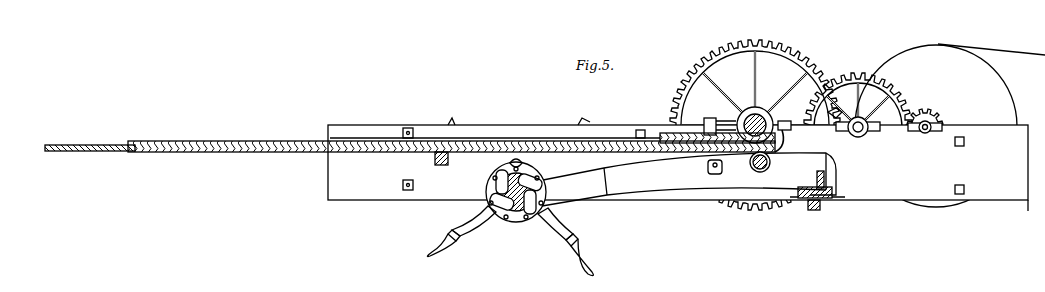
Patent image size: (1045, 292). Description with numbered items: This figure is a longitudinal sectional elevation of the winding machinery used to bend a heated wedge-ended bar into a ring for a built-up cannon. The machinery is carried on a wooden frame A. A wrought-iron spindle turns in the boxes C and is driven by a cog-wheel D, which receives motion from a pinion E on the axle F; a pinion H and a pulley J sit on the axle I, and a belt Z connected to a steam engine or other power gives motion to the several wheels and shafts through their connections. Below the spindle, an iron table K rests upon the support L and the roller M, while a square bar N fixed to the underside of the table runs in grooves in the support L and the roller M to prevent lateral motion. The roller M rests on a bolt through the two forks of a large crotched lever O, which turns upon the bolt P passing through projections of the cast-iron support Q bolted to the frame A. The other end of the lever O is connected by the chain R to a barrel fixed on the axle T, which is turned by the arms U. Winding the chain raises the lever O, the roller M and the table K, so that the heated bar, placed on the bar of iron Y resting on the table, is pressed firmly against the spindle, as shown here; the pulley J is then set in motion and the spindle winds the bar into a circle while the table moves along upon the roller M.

The frame A is at (678, 164).
The boxes C is at (849, 127).
The cog-wheel D is at (755, 127).
The pinion E is at (858, 110).
The axle F is at (828, 108).
The pinion H is at (925, 121).
The axle I is at (925, 137).
The pulley J is at (936, 131).
The iron table K is at (461, 139).
The support L is at (450, 160).
The roller M is at (753, 168).
The square bar N is at (326, 143).
The crotched bar or lever O is at (687, 179).
The bolt P is at (811, 171).
The support Q is at (817, 204).
The chain R is at (516, 202).
The axle T is at (522, 159).
The arms U is at (510, 241).
The bar of iron Y is at (495, 130).
The belt Z is at (991, 132).